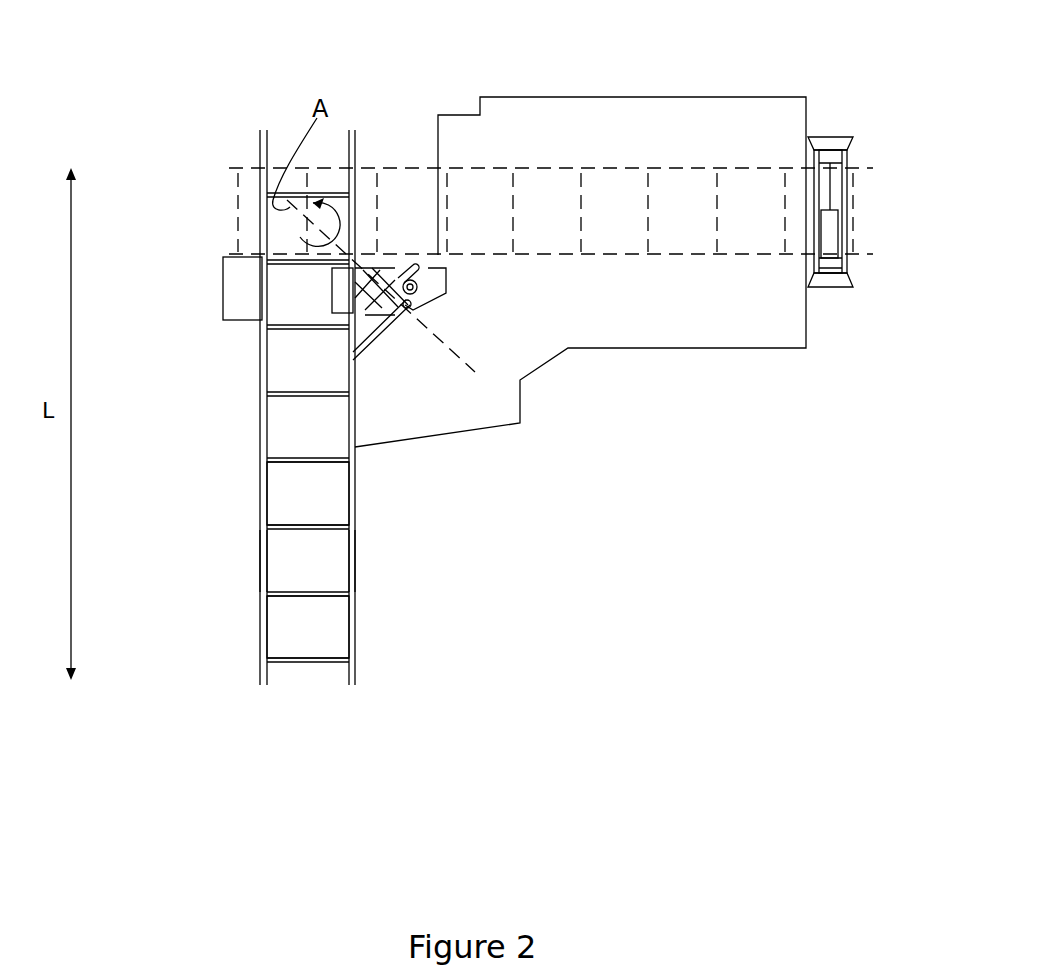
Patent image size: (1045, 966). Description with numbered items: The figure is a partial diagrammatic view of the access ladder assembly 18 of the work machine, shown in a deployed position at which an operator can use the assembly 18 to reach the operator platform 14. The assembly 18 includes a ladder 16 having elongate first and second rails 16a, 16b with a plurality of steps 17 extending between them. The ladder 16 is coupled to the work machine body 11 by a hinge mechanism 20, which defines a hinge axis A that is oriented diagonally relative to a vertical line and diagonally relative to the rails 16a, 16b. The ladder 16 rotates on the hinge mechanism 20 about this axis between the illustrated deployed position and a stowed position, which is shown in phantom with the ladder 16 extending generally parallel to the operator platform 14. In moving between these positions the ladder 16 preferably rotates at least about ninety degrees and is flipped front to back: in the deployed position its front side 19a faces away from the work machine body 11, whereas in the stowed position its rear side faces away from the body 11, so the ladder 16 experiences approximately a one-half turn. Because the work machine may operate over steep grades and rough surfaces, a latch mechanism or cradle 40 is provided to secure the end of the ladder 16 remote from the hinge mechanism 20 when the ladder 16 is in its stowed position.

The work machine body 11 is at (683, 193).
The operator platform 14 is at (222, 244).
The ladder 16 is at (250, 489).
The first rail 16a is at (350, 547).
The second rail 16b is at (263, 567).
The steps 17 is at (305, 525).
The access ladder assembly 18 is at (250, 110).
The front side 19a is at (322, 630).
The hinge mechanism 20 is at (402, 343).
The latch mechanism or cradle 40 is at (828, 302).